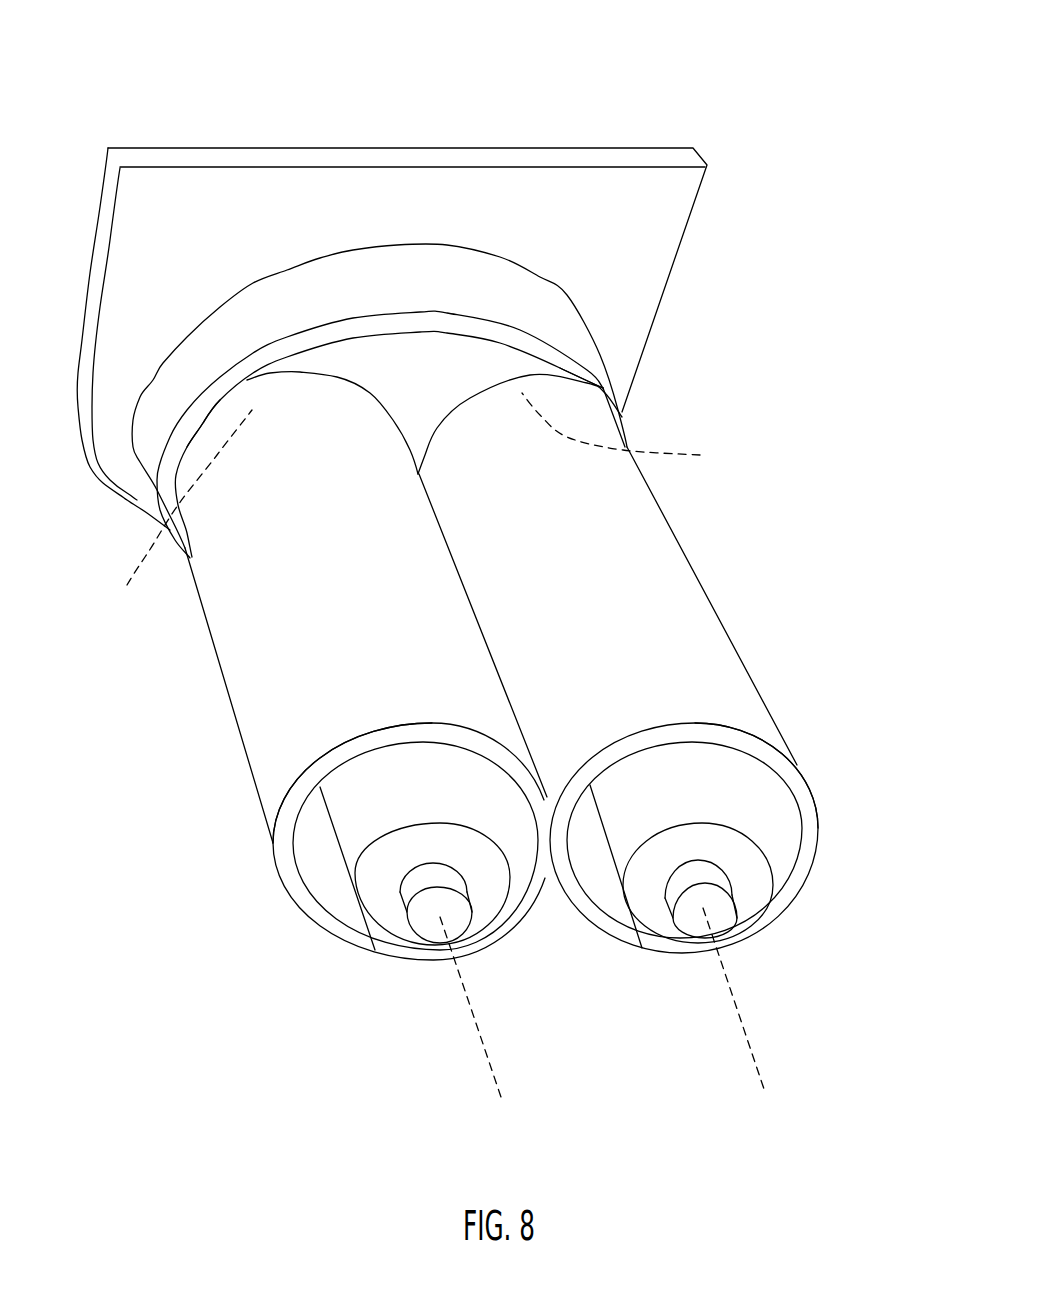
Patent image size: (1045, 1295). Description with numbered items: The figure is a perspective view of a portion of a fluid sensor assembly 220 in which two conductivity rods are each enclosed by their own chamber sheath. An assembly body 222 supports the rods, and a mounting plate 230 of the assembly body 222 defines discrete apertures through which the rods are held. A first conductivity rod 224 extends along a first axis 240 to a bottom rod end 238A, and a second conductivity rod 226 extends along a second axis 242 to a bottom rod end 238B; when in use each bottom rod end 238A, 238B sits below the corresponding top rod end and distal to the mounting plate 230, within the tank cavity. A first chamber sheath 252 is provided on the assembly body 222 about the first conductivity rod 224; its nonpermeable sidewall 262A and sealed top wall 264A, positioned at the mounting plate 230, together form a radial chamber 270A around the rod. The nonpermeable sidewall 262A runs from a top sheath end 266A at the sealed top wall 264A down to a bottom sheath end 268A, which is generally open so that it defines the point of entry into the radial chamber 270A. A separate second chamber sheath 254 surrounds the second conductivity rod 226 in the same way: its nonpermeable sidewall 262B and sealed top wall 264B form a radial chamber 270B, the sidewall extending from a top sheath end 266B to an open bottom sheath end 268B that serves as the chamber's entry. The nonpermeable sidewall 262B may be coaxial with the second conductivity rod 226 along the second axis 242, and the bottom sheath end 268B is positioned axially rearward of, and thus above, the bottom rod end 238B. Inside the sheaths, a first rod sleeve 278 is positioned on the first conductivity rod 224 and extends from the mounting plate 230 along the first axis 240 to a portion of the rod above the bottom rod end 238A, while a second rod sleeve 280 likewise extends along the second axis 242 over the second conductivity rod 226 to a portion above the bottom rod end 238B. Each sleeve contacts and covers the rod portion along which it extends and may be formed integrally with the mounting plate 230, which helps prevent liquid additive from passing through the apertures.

The fluid sensor assembly 220 is at (584, 85).
The assembly body 222 is at (677, 160).
The mounting plate 230 is at (548, 320).
The top sheath end 266A is at (600, 388).
The top sheath end 266B is at (185, 446).
The sealed top wall 264A is at (637, 433).
The sealed top wall 264B is at (173, 519).
The first chamber sheath 252 is at (697, 592).
The second chamber sheath 254 is at (247, 640).
The nonpermeable sidewall 262A is at (752, 732).
The nonpermeable sidewall 262B is at (312, 782).
The bottom sheath end 268A is at (806, 809).
The bottom sheath end 268B is at (283, 841).
The radial chamber 270A is at (592, 882).
The radial chamber 270B is at (316, 869).
The first rod sleeve 278 is at (700, 807).
The second rod sleeve 280 is at (403, 827).
The first conductivity rod 224 is at (728, 892).
The second conductivity rod 226 is at (467, 880).
The bottom rod end 238A is at (698, 932).
The bottom rod end 238B is at (420, 923).
The first axis 240 is at (758, 1058).
The second axis 242 is at (483, 1053).